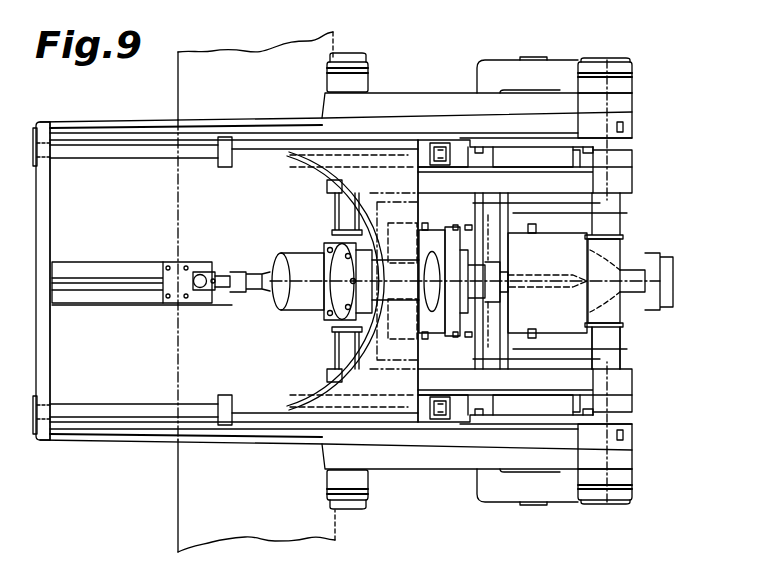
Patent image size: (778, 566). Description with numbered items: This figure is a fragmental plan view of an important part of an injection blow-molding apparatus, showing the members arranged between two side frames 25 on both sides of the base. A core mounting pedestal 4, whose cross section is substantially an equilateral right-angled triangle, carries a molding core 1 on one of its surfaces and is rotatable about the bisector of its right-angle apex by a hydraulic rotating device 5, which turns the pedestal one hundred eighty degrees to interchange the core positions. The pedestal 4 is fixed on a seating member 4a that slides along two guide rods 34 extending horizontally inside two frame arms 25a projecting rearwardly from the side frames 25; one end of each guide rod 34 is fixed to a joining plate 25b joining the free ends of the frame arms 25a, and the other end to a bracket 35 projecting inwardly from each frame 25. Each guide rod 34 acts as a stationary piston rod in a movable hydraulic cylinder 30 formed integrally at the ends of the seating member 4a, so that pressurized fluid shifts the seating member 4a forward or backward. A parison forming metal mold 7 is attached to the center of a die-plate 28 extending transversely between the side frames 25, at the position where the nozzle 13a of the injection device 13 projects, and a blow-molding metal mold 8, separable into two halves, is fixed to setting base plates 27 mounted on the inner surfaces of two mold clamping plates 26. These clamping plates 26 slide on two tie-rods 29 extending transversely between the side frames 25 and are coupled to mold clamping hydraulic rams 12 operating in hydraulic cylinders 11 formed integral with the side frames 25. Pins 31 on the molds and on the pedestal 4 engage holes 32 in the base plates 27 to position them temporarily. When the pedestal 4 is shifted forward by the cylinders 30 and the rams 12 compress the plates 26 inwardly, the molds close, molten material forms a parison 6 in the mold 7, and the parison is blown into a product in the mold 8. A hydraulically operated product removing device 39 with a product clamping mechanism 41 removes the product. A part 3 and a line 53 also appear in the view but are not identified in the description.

The molding core 1 is at (550, 274).
The support bar 3 is at (253, 130).
The core mounting pedestal 4 is at (442, 250).
The seating member 4a is at (330, 186).
The rotating device 5 is at (312, 250).
The parison 6 is at (525, 272).
The parison forming metal mold 7 is at (566, 317).
The blow-molding metal mold 8 is at (452, 140).
The hydraulic cylinder 11 is at (512, 62).
The mold clamping hydraulic ram 12 is at (626, 148).
The injection device 13 is at (664, 240).
The nozzle 13a is at (620, 302).
The side frame 25 is at (388, 98).
The frame arm 25a is at (128, 122).
The joining plate 25b is at (46, 218).
The mold clamping plate 26 is at (620, 172).
The setting base plate 27 is at (600, 180).
The die-plate 28 is at (625, 355).
The tie-rod 29 is at (605, 214).
The hydraulic cylinder 30 is at (246, 160).
The pin 31 is at (538, 226).
The hole 32 is at (533, 197).
The guide rod 34 is at (96, 152).
The bracket 35 is at (440, 143).
The product removing device 39 is at (190, 305).
The product clamping mechanism 41 is at (250, 305).
The boundary line 53 is at (185, 200).